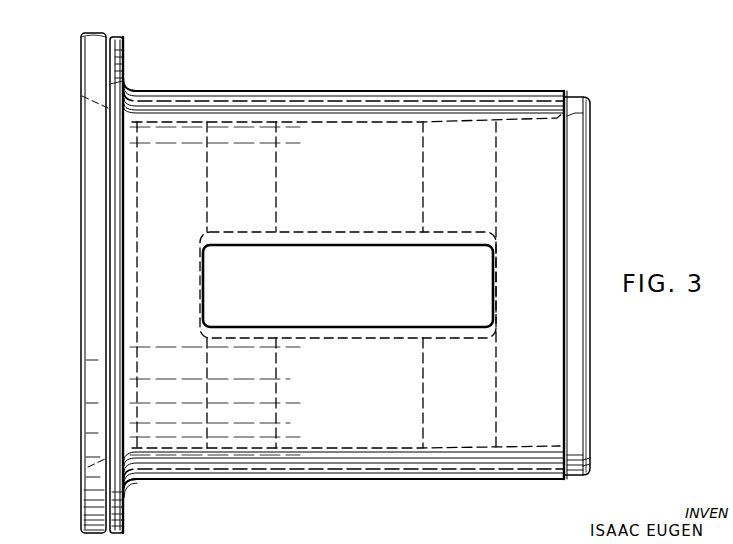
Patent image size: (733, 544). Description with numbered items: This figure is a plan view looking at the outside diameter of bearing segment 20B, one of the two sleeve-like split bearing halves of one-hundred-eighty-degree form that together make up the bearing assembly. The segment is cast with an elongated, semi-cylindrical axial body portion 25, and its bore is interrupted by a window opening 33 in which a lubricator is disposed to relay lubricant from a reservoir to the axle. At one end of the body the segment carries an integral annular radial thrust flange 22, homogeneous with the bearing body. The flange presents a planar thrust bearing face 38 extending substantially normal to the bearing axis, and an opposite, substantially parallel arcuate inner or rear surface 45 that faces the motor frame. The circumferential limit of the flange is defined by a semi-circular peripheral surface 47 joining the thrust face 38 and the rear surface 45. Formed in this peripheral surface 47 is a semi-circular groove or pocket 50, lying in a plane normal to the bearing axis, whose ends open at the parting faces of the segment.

The bearing segment 20B is at (482, 92).
The thrust flange 22 is at (81, 215).
The axial body portion 25 is at (590, 196).
The window opening 33 is at (320, 246).
The thrust bearing face 38 is at (81, 503).
The arcuate inner surface 45 is at (123, 500).
The semi-circular peripheral surface 47 is at (100, 33).
The semi-circular groove 50 is at (107, 308).